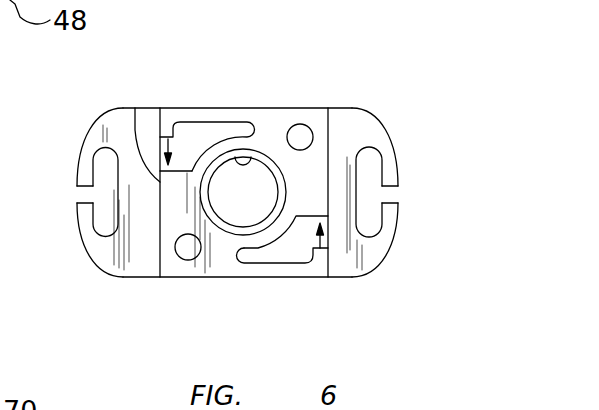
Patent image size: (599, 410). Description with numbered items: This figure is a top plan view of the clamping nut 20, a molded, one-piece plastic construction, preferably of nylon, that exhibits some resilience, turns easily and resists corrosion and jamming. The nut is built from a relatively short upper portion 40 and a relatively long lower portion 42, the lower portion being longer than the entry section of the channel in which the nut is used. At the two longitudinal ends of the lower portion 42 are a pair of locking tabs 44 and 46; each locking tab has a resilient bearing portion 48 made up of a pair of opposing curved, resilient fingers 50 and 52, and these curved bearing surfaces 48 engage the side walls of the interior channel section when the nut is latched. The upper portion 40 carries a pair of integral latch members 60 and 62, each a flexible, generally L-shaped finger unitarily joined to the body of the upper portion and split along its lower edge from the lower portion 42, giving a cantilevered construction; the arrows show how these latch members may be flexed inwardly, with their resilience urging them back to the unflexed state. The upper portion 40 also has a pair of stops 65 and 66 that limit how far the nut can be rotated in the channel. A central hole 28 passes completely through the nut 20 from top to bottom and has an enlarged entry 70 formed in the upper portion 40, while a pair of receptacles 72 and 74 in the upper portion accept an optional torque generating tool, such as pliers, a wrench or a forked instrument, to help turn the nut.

The clamping nut 20 is at (314, 29).
The central hole 28 is at (251, 160).
The upper portion 40 is at (135, 108).
The lower portion 42 is at (114, 110).
The locking tab 44 is at (116, 272).
The locking tab 46 is at (389, 152).
The resilient bearing portion 48 is at (86, 147).
The curved resilient finger 50 is at (80, 212).
The curved resilient finger 52 is at (79, 186).
The latch member 60 is at (212, 108).
The latch member 62 is at (302, 277).
The stop 65 is at (160, 253).
The stop 66 is at (330, 139).
The enlarged entry 70 is at (269, 150).
The receptacle 72 is at (296, 137).
The receptacle 74 is at (190, 262).